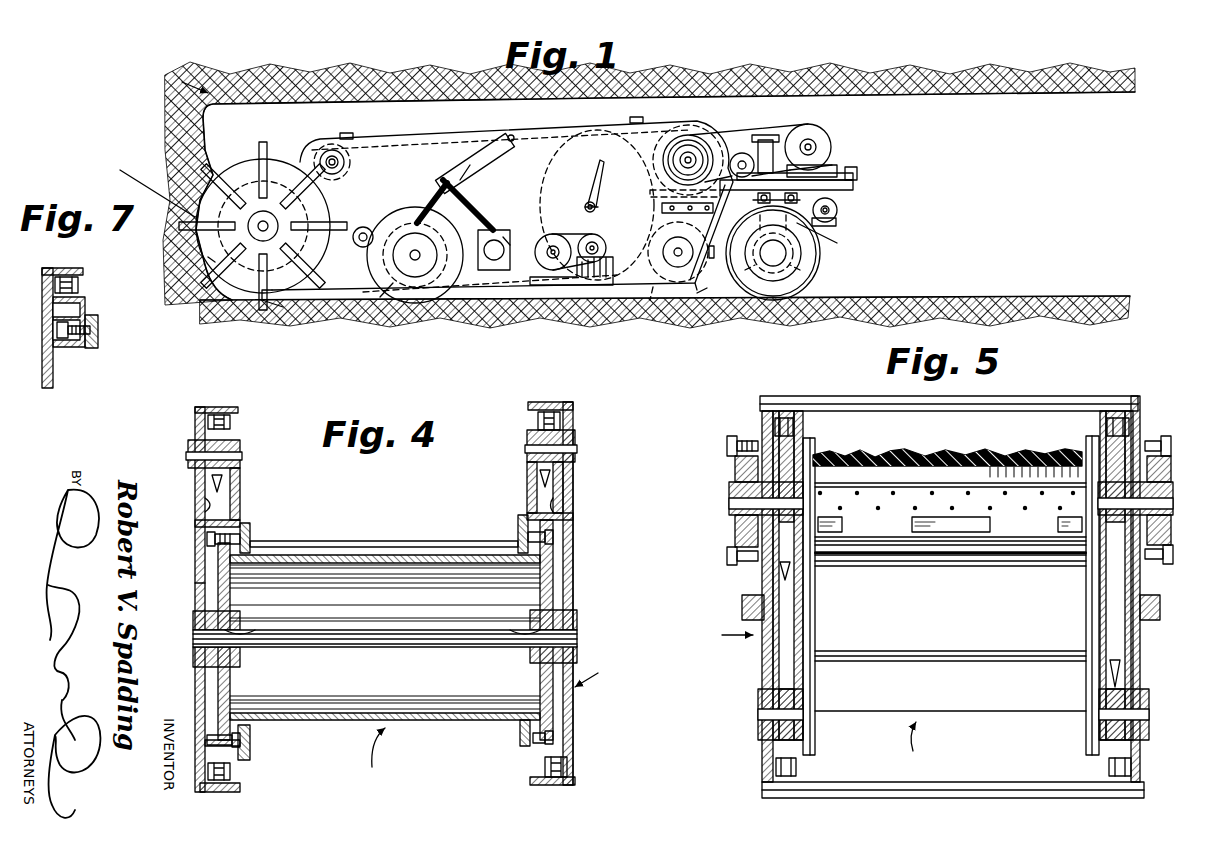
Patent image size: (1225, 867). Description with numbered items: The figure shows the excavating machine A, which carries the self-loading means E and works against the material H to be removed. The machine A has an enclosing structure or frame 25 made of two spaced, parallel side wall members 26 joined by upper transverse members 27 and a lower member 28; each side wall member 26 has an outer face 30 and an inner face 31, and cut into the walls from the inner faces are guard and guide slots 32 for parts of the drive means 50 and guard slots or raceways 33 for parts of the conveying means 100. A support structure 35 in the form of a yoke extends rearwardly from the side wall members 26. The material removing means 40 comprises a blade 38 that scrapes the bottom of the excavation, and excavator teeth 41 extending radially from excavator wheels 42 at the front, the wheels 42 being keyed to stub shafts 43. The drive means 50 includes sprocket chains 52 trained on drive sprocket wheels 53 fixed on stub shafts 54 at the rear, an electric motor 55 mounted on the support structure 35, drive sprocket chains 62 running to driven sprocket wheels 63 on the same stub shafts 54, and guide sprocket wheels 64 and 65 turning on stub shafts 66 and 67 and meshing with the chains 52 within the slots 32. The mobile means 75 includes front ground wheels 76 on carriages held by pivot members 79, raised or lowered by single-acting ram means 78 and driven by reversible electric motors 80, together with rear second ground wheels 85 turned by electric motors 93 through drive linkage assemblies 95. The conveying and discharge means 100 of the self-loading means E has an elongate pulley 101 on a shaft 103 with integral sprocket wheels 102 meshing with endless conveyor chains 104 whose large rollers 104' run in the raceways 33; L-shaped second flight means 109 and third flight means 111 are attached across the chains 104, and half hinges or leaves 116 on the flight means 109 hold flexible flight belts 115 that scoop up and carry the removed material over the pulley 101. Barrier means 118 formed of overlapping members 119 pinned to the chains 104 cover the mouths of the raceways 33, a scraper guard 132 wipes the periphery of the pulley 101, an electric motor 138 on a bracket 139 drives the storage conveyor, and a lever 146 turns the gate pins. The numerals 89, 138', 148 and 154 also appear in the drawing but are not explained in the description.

In FIG. 1, the enclosing structure or frame 25 is at (378, 138).
In FIG. 4, the enclosing structure or frame 25 is at (573, 482).
In FIG. 1, the longitudinal structural side wall members 26 is at (420, 186).
In FIG. 7, the longitudinal structural side wall members 26 is at (53, 377).
In FIG. 4, the longitudinal structural side wall members 26 is at (197, 563).
In FIG. 5, the longitudinal structural side wall members 26 is at (762, 649).
In FIG. 1, the upper transverse structural members 27 is at (362, 118).
In FIG. 5, the upper transverse structural members 27 is at (815, 404).
In FIG. 1, the lower transverse structural member 28 is at (697, 293).
In FIG. 1, the outer face 30 is at (380, 297).
In FIG. 4, the outer face 30 is at (195, 583).
In FIG. 5, the outer face 30 is at (762, 583).
In FIG. 4, the inner face 31 is at (240, 492).
In FIG. 7, the guard and guide slots 32 is at (72, 268).
In FIG. 4, the guard and guide slots 32 is at (240, 413).
In FIG. 5, the guard and guide slots 32 is at (800, 775).
In FIG. 7, the guard slots or raceways 33 is at (53, 330).
In FIG. 1, the support structure 35 is at (853, 175).
In FIG. 5, the support structure 35 is at (1138, 605).
In FIG. 1, the blade 38 is at (283, 307).
In FIG. 1, the material removing means 40 is at (235, 158).
In FIG. 1, the excavator teeth 41 is at (267, 147).
In FIG. 1, the excavator wheels 42 is at (208, 257).
In FIG. 1, the stub shafts 43 is at (283, 222).
In FIG. 1, the drive means 50 is at (838, 140).
In FIG. 4, the drive means 50 is at (235, 430).
In FIG. 5, the drive means 50 is at (740, 431).
In FIG. 7, the sprocket chains 52 is at (82, 283).
In FIG. 4, the sprocket chains 52 is at (567, 413).
In FIG. 5, the sprocket chains 52 is at (1118, 416).
In FIG. 5, the drive sprocket wheels 53 is at (789, 438).
In FIG. 1, the stub shafts 54 is at (680, 158).
In FIG. 5, the stub shafts 54 is at (729, 503).
In FIG. 1, the electric motor 55 is at (817, 130).
In FIG. 1, the drive sprocket chains 62 is at (742, 153).
In FIG. 5, the drive sprocket chains 62 is at (727, 558).
In FIG. 1, the driven sprocket wheels 63 is at (690, 143).
In FIG. 5, the driven sprocket wheels 63 is at (735, 469).
In FIG. 4, the guide sprocket wheels 64 is at (240, 447).
In FIG. 1, the guide sprocket wheels 65 is at (653, 287).
In FIG. 5, the guide sprocket wheels 65 is at (775, 682).
In FIG. 4, the stub shafts 66 is at (242, 458).
In FIG. 5, the stub shafts 67 is at (758, 714).
In FIG. 1, the mobile means 75 is at (822, 257).
In FIG. 1, the ground wheels 76 is at (420, 303).
In FIG. 1, the single-acting ram means 78 is at (475, 153).
In FIG. 1, the pivot members 79 is at (503, 237).
In FIG. 1, the reversible electric motors 80 is at (493, 277).
In FIG. 1, the second ground wheels 85 is at (805, 274).
In FIG. 1, the post 89 is at (765, 135).
In FIG. 1, the electric motors 93 is at (838, 208).
In FIG. 1, the drive linkage assemblies 95 is at (838, 214).
In FIG. 5, the removed material conveying and discharge means 100 is at (987, 445).
In FIG. 4, the elongate pulley 101 is at (488, 717).
In FIG. 4, the sprocket wheels 102 is at (220, 592).
In FIG. 4, the shaft 103 is at (580, 640).
In FIG. 4, the endless industrial conveyor chains 104 is at (410, 727).
In FIG. 7, the rollers 104' is at (106, 348).
In FIG. 4, the rollers 104' is at (415, 527).
In FIG. 5, the second flight means 109 is at (869, 542).
In FIG. 5, the third flight means 111 is at (884, 655).
In FIG. 5, the flexible flight belts 115 is at (895, 467).
In FIG. 1, the half hinge or leaf 116 is at (598, 207).
In FIG. 5, the half hinge or leaf 116 is at (980, 507).
In FIG. 7, the barrier means 118 is at (100, 322).
In FIG. 4, the barrier means 118 is at (252, 532).
In FIG. 4, the overlapping members 119 is at (250, 750).
In FIG. 5, the overlapping members 119 is at (820, 653).
In FIG. 1, the scraper guard 132 is at (585, 230).
In FIG. 1, the electric motor 138 is at (559, 239).
In FIG. 1, the pulley 138' is at (610, 245).
In FIG. 1, the bracket 139 is at (563, 287).
In FIG. 1, the lever 146 is at (597, 172).
In FIG. 1, the bracket 148 is at (717, 215).
In FIG. 1, the bracket 154 is at (838, 224).
In FIG. 1, the machine A is at (185, 84).
In FIG. 4, the machine A is at (592, 677).
In FIG. 5, the machine A is at (726, 636).
In FIG. 4, the self-loading means E is at (372, 758).
In FIG. 5, the self-loading means E is at (917, 747).
In FIG. 1, the material H is at (149, 190).